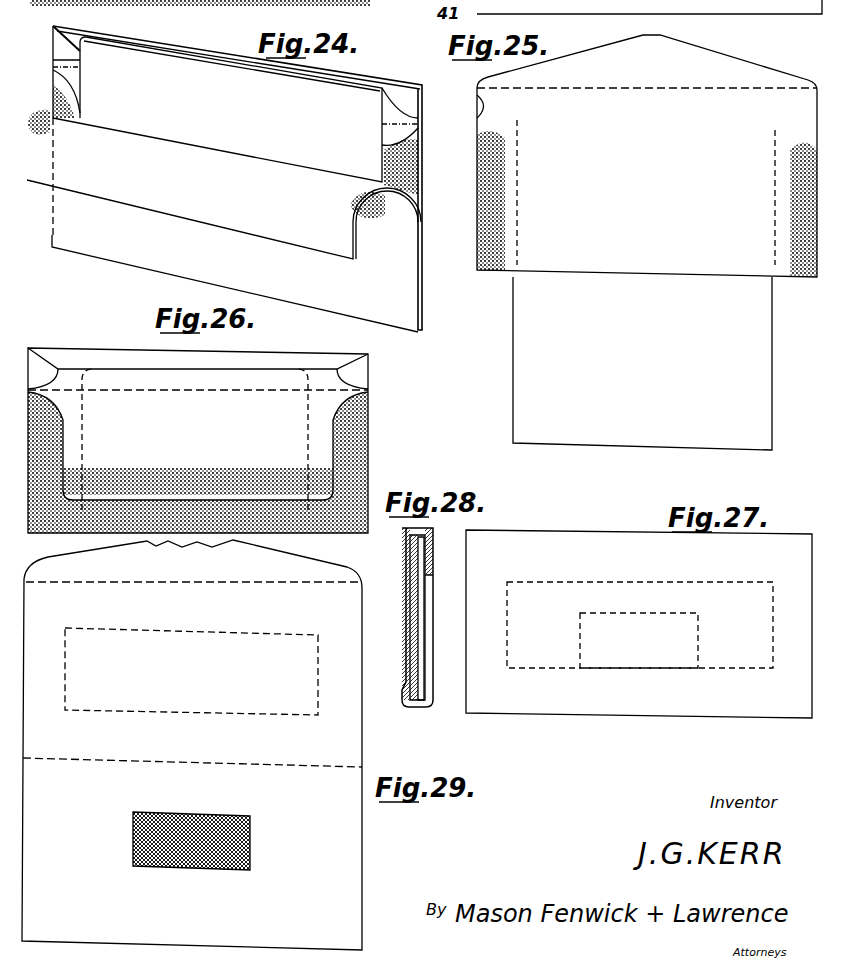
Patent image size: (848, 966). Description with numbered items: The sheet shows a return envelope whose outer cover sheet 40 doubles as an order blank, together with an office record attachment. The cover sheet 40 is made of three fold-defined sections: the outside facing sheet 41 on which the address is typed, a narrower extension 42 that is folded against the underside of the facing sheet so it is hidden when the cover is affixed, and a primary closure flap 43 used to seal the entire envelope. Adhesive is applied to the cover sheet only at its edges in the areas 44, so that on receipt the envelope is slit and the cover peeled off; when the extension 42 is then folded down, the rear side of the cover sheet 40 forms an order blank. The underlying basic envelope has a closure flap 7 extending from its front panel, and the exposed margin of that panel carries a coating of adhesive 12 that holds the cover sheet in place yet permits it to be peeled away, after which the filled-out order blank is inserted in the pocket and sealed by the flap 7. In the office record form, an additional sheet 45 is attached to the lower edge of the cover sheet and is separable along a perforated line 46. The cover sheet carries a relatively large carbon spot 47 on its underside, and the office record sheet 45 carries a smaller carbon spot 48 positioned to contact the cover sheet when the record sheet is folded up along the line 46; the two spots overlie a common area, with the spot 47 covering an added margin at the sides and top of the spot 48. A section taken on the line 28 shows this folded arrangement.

In FIG. 26, the closure flap 7 is at (318, 428).
In FIG. 26, the adhesive coating 12 is at (368, 453).
In FIG. 27, the section line 28 is at (639, 757).
In FIG. 24, the cover sheet 40 is at (390, 306).
In FIG. 24, the outside facing sheet 41 is at (395, 250).
In FIG. 25, the outside facing sheet 41 is at (530, 155).
In FIG. 24, the extension 42 is at (368, 127).
In FIG. 25, the extension 42 is at (515, 260).
In FIG. 25, the primary closure flap 43 is at (735, 70).
In FIG. 26, the primary closure flap 43 is at (293, 361).
In FIG. 28, the primary closure flap 43 is at (430, 562).
In FIG. 24, the adhesive areas 44 is at (415, 165).
In FIG. 25, the adhesive areas 44 is at (488, 247).
In FIG. 27, the office record sheet 45 is at (550, 697).
In FIG. 28, the office record sheet 45 is at (405, 572).
In FIG. 29, the office record sheet 45 is at (357, 870).
In FIG. 28, the perforated line 46 is at (410, 706).
In FIG. 29, the perforated line 46 is at (310, 764).
In FIG. 27, the carbon spot 47 is at (693, 582).
In FIG. 29, the carbon spot 47 is at (272, 632).
In FIG. 27, the carbon spot 48 is at (698, 645).
In FIG. 29, the carbon spot 48 is at (250, 833).